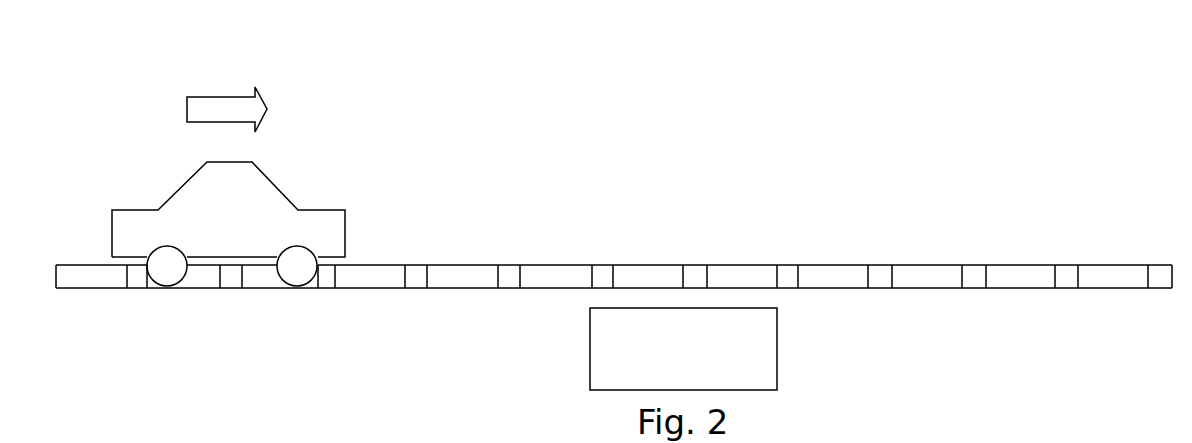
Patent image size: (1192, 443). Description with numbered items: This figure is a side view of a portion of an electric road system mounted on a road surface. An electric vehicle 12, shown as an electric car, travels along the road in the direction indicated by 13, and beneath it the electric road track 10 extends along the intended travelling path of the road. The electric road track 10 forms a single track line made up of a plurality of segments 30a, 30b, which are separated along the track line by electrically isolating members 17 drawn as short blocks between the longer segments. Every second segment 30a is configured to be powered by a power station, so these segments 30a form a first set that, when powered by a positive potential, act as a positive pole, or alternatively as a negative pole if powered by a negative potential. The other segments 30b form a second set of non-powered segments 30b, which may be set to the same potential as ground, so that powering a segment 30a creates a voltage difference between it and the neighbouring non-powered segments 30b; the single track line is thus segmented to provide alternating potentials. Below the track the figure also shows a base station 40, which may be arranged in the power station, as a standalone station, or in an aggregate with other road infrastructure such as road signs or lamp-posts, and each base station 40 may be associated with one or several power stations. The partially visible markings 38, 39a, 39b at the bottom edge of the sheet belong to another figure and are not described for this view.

The electric road track 10 is at (478, 247).
The electric vehicle 12 is at (207, 177).
The direction of travel 13 is at (212, 105).
The electrically isolating member 17 is at (137, 288).
The first set of segments 30a is at (100, 288).
The second set of non-powered segments 30b is at (192, 288).
The base station 40 is at (777, 362).
The partially visible numeral 38 is at (910, 433).
The partially visible numeral 39a is at (1084, 436).
The partially visible numeral 39b is at (1139, 436).